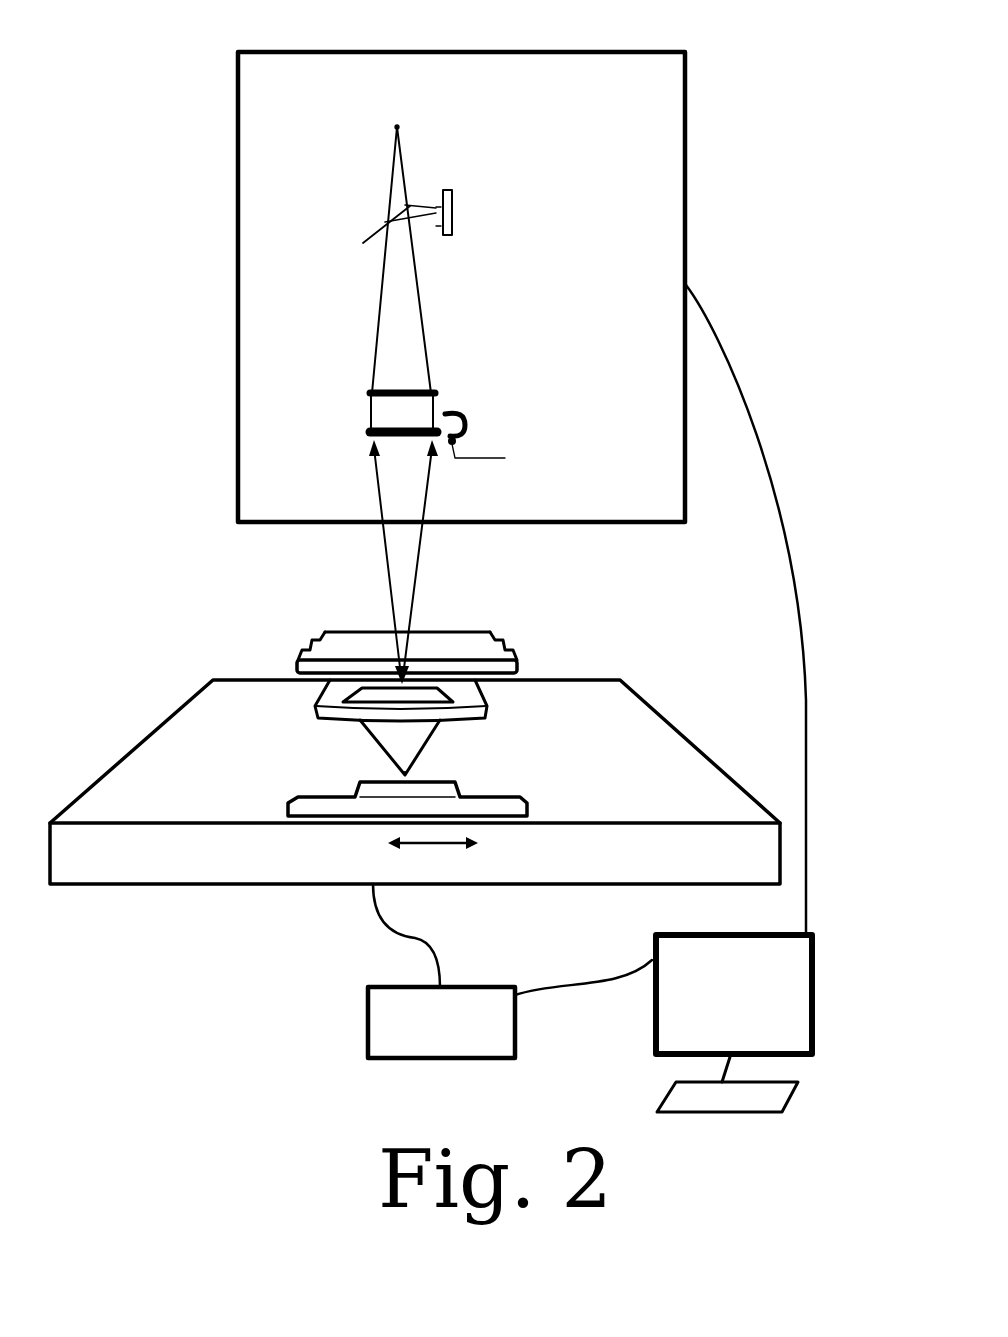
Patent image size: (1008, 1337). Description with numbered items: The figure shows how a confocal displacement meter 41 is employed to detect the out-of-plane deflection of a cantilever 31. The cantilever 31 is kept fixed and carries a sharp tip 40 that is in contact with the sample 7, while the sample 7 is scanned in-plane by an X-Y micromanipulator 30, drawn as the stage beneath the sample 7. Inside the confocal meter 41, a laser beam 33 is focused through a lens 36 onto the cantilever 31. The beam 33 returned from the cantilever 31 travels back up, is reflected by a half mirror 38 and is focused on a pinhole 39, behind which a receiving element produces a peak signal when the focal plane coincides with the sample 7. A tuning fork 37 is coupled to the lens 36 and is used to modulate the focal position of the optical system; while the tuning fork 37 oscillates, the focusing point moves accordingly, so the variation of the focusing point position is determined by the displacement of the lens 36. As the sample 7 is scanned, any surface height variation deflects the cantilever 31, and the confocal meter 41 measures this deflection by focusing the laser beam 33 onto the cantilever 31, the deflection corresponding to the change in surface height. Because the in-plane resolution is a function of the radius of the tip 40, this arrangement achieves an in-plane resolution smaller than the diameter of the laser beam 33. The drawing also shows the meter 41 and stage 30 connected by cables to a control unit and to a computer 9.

The sample 7 is at (407, 795).
The computer 9 is at (817, 1060).
The X-Y micromanipulator 30 is at (200, 855).
The cantilever 31 is at (370, 740).
The laser beam 33 is at (385, 572).
The lens 36 is at (350, 433).
The tuning fork 37 is at (485, 410).
The half mirror 38 is at (390, 227).
The pinhole 39 is at (422, 188).
The sharp tip 40 is at (440, 757).
The confocal meter 41 is at (237, 160).